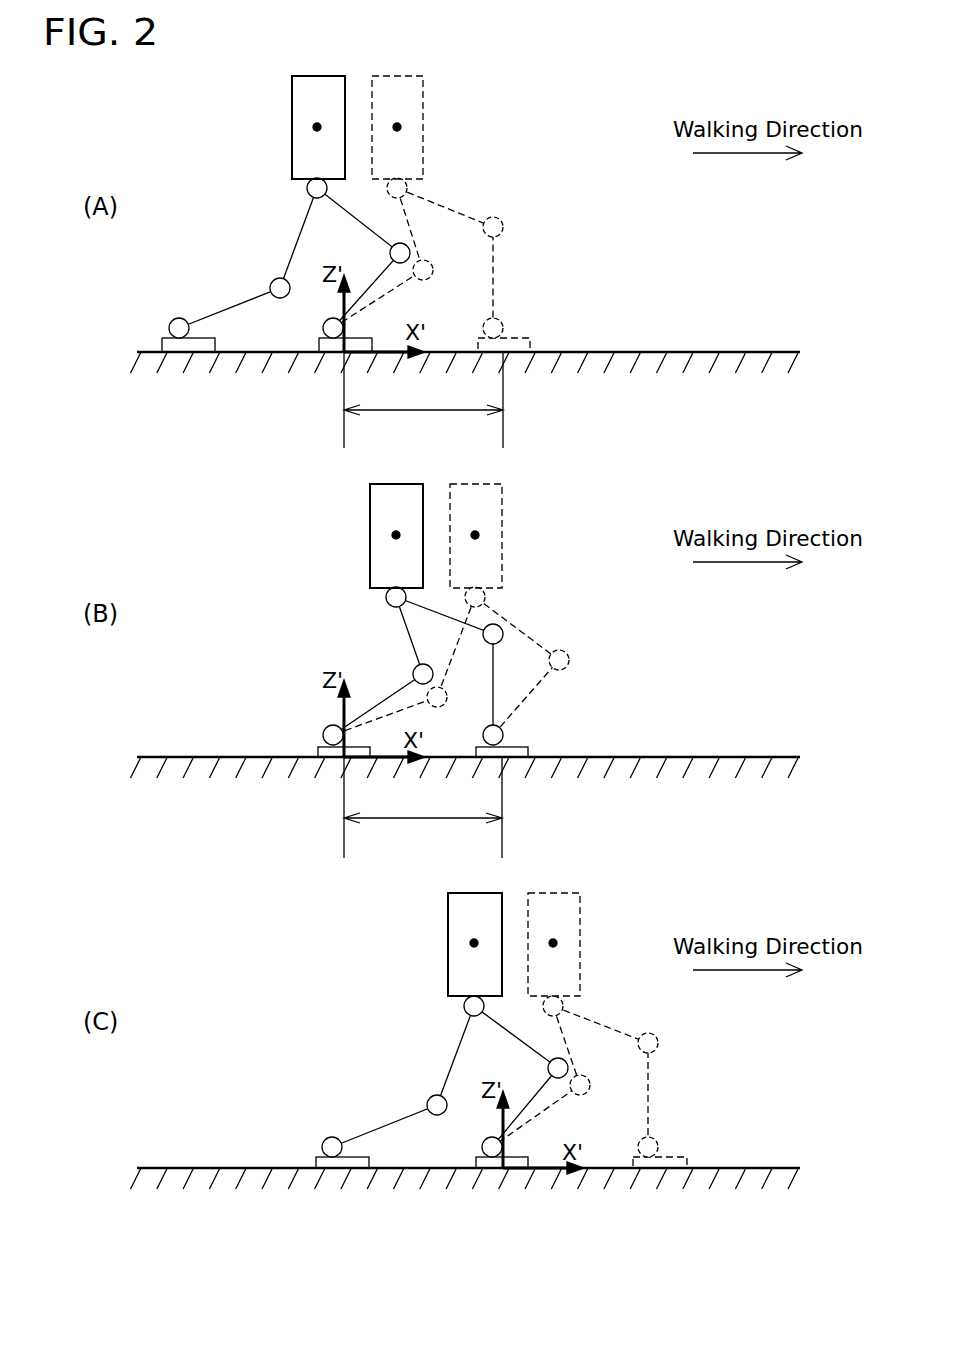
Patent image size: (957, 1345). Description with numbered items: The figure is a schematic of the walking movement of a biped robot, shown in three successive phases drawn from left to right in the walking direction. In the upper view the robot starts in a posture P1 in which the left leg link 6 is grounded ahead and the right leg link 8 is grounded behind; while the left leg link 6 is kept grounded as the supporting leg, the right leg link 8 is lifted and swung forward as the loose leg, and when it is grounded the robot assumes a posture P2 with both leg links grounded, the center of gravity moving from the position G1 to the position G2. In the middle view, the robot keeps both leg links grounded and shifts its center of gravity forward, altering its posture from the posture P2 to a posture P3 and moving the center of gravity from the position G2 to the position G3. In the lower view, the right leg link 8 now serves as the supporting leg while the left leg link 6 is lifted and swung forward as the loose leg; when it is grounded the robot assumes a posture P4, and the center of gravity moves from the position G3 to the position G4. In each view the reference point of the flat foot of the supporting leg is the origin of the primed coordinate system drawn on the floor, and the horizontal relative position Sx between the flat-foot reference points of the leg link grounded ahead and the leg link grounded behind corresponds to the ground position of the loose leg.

The left leg link 6 is at (357, 219).
The right leg link 8 is at (300, 237).
The posture P1 is at (292, 128).
The posture P2 is at (423, 127).
The posture P3 is at (502, 535).
The posture P4 is at (580, 943).
The position of center of gravity G1 is at (317, 122).
The position of center of gravity G2 is at (397, 122).
The position of center of gravity G3 is at (475, 530).
The position of center of gravity G4 is at (553, 938).
The relative position in walking direction Sx is at (423, 605).